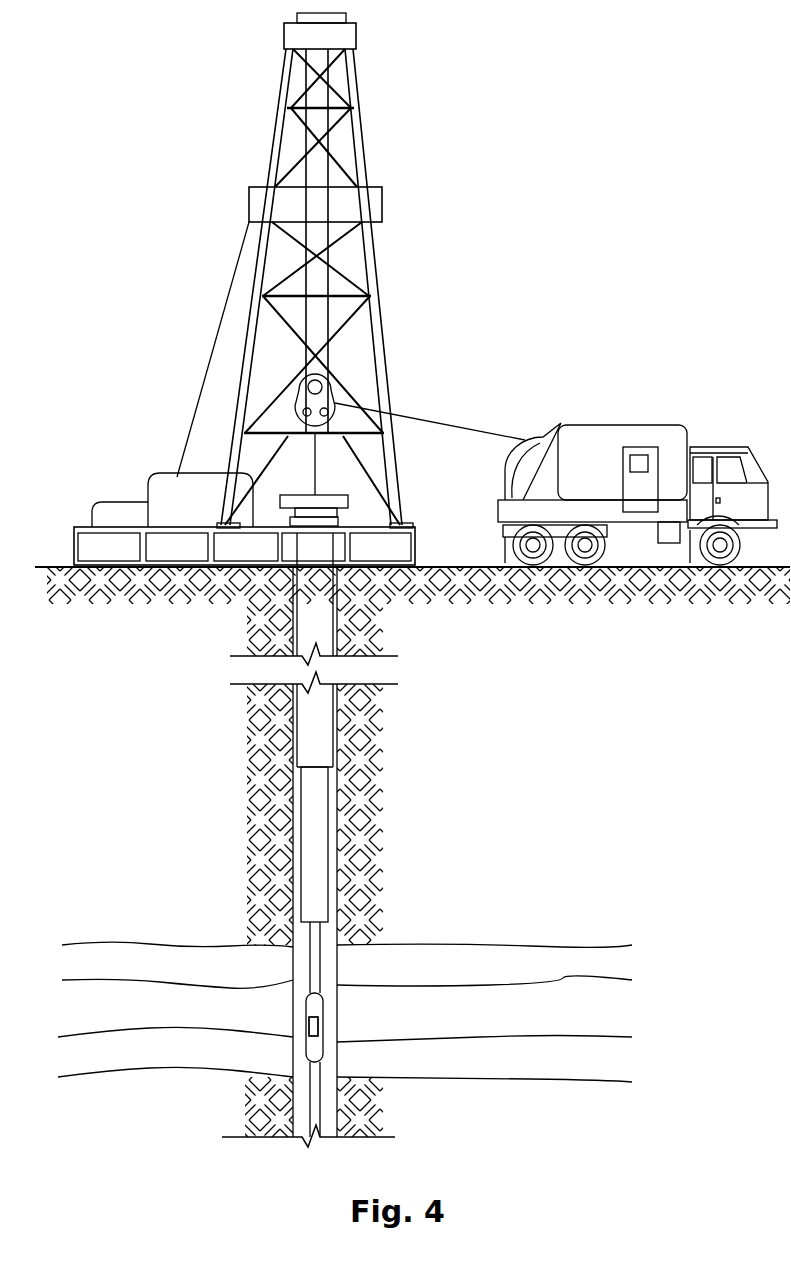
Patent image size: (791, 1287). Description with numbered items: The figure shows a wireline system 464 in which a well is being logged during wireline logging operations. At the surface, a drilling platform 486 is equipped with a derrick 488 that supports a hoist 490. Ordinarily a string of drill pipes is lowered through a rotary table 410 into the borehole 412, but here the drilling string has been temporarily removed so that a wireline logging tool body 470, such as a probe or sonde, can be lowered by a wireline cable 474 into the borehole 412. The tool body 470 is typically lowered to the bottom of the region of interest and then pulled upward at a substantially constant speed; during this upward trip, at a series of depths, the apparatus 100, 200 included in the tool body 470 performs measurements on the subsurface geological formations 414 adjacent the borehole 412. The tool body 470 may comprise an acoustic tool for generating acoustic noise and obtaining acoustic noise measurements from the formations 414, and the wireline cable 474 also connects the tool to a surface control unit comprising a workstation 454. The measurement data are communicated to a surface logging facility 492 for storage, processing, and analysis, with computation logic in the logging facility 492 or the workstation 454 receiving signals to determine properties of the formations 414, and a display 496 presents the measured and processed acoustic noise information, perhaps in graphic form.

The wireline system 464 is at (572, 213).
The hoist 490 is at (324, 382).
The wireline cable 474 is at (435, 420).
The rotary table 410 is at (347, 494).
The derrick 488 is at (340, 519).
The drilling platform 486 is at (416, 549).
The borehole 412 is at (297, 953).
The wireline logging tool body 470 is at (324, 995).
The apparatus 100 is at (320, 1024).
The apparatus 200 is at (313, 1026).
The subsurface geological formations 414 is at (645, 937).
The surface logging facility 492 is at (587, 425).
The workstation 454 is at (623, 490).
The display 496 is at (640, 455).